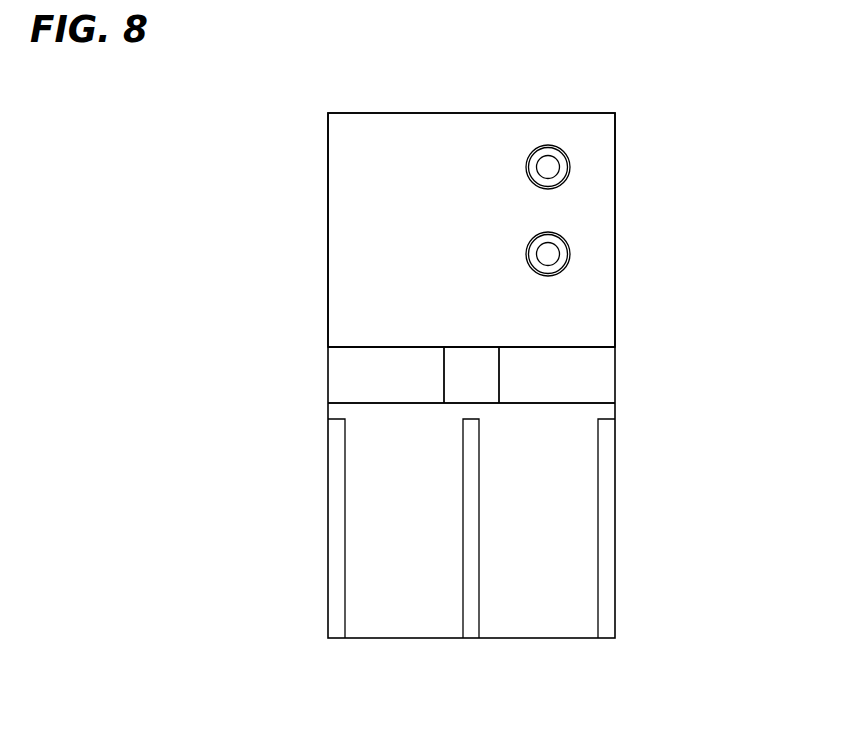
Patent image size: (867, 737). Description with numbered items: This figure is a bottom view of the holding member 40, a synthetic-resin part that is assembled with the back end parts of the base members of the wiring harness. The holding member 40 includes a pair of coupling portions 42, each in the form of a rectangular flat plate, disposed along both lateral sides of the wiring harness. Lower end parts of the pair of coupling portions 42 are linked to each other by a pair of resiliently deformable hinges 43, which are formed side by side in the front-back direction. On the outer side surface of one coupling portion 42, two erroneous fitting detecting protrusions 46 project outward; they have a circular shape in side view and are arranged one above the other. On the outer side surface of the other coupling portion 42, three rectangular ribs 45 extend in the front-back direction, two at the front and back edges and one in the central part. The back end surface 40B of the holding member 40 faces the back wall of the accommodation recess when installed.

The holding member 40 is at (266, 344).
The back end surface 40B is at (615, 318).
The coupling portion 42 is at (593, 232).
The hinge 43 is at (408, 388).
The rectangular rib 45 is at (606, 630).
The erroneous fitting detecting protrusion 46 is at (548, 254).